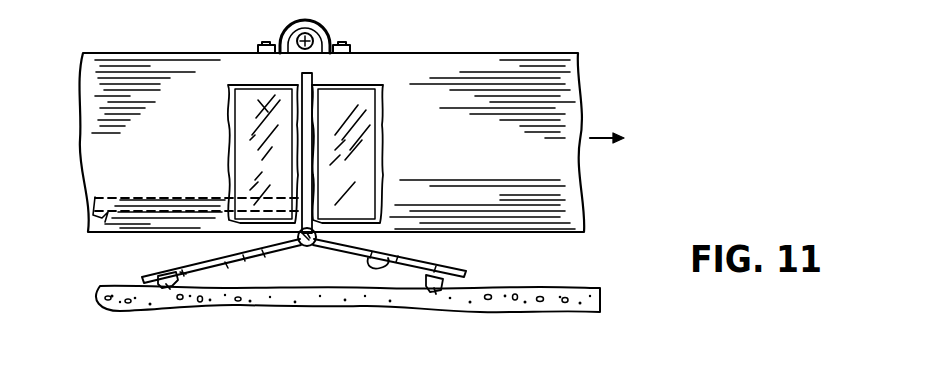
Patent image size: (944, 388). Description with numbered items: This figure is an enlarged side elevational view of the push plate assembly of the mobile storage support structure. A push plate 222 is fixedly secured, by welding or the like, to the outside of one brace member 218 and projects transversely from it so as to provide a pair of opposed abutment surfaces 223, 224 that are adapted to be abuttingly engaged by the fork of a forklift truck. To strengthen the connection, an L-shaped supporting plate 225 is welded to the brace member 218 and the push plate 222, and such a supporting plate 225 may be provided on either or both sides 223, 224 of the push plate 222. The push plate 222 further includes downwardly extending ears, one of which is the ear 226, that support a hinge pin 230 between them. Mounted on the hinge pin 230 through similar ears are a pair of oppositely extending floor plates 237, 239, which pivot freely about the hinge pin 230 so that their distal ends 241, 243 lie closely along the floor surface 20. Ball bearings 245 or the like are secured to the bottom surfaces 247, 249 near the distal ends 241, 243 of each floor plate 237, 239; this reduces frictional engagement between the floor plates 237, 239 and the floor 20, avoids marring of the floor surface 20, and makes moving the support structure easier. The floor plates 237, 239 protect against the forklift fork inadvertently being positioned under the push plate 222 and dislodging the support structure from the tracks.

The floor surface 20 is at (555, 288).
The brace member 218 is at (452, 90).
The push plate 222 is at (312, 78).
The abutment surface 223 is at (300, 128).
The abutment surface 224 is at (320, 106).
The L-shaped supporting plate 225 is at (240, 145).
The downwardly extending ear 226 is at (92, 225).
The hinge pin 230 is at (270, 248).
The floor plate 237 is at (226, 262).
The floor plate 239 is at (413, 252).
The distal end 241 is at (142, 277).
The distal end 243 is at (462, 275).
The ball bearings 245 is at (165, 286).
The bottom surface 247 is at (265, 257).
The bottom surface 249 is at (392, 260).